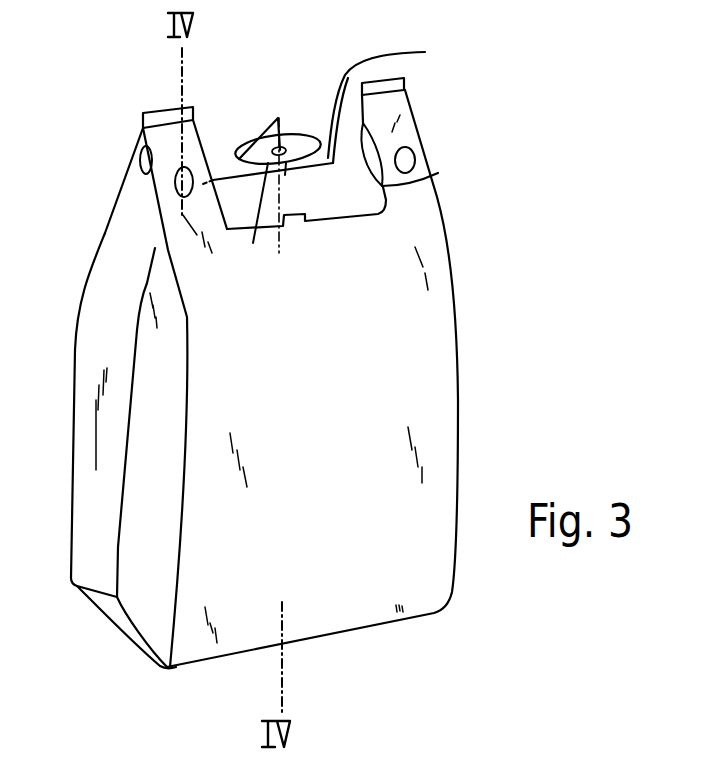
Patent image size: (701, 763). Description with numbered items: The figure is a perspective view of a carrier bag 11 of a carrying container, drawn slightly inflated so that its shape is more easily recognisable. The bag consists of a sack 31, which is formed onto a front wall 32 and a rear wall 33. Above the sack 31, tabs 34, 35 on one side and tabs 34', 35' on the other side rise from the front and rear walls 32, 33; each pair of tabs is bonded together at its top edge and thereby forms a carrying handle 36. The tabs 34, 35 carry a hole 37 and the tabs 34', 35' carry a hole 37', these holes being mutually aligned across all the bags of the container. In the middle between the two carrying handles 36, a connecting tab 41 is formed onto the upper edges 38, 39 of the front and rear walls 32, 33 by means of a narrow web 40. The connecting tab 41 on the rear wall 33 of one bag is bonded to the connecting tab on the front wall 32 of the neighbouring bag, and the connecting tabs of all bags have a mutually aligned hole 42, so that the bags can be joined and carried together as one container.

The carrier bag 11 is at (470, 382).
The sack 31 is at (345, 478).
The front wall 32 is at (430, 253).
The rear wall 33 is at (243, 200).
The tab 34 is at (149, 166).
The tab 34' is at (427, 140).
The tab 35 is at (93, 151).
The tab 35' is at (410, 111).
The carrying handle 36 is at (206, 110).
The hole 37 is at (114, 189).
The hole 37' is at (451, 168).
The upper edge 38 is at (345, 219).
The upper edge 39 is at (338, 88).
The narrow web 40 is at (282, 234).
The connecting tab 41 is at (302, 142).
The hole 42 is at (262, 148).